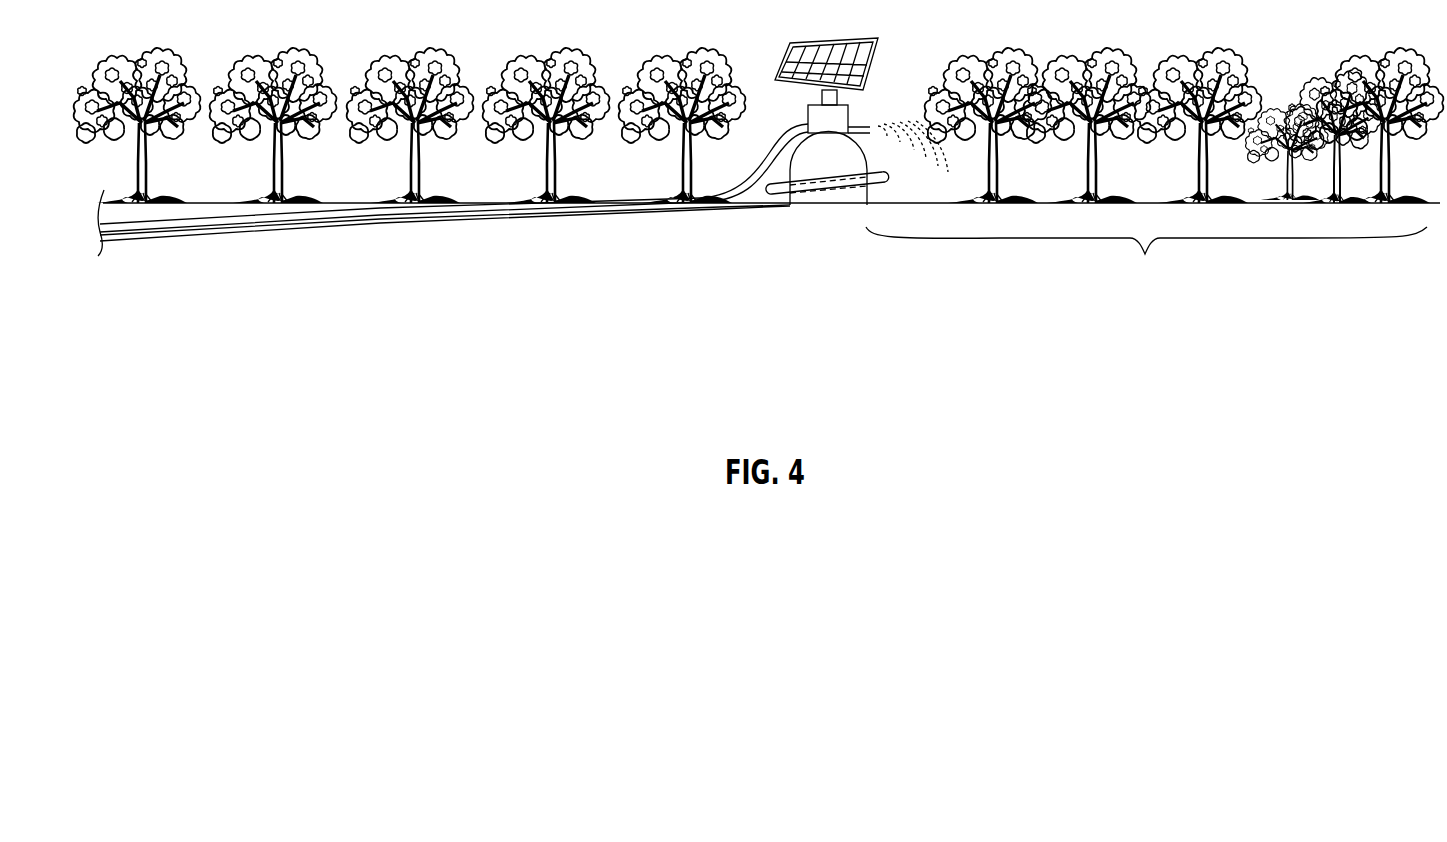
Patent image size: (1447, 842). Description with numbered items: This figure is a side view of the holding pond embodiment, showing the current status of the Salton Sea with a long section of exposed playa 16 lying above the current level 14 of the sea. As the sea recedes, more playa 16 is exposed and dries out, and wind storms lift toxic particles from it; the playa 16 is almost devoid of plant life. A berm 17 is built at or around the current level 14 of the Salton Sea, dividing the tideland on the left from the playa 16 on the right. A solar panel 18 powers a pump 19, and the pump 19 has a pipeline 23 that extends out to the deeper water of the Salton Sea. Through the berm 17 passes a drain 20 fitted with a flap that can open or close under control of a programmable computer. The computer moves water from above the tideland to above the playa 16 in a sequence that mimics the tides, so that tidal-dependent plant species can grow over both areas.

The current level of the Salton Sea 14 is at (318, 203).
The playa 16 is at (1154, 168).
The berm 17 is at (833, 203).
The solar panel 18 is at (878, 40).
The pump 19 is at (808, 118).
The drain 20 is at (838, 173).
The pipeline 23 is at (232, 221).